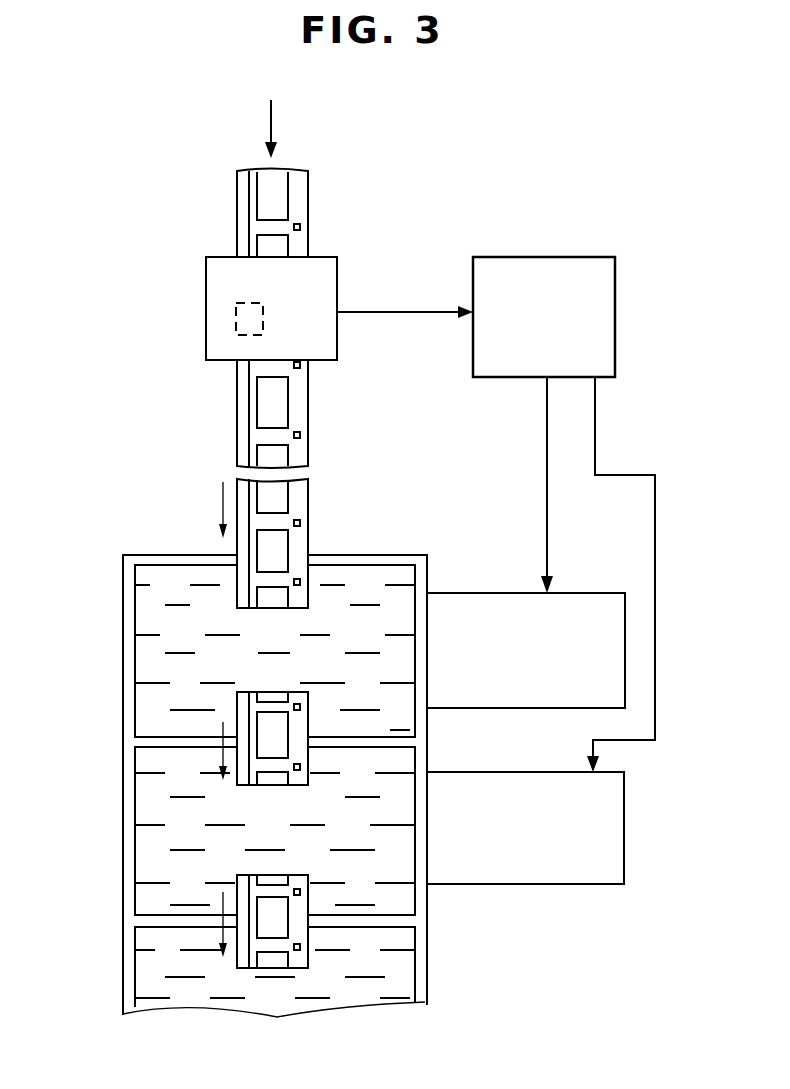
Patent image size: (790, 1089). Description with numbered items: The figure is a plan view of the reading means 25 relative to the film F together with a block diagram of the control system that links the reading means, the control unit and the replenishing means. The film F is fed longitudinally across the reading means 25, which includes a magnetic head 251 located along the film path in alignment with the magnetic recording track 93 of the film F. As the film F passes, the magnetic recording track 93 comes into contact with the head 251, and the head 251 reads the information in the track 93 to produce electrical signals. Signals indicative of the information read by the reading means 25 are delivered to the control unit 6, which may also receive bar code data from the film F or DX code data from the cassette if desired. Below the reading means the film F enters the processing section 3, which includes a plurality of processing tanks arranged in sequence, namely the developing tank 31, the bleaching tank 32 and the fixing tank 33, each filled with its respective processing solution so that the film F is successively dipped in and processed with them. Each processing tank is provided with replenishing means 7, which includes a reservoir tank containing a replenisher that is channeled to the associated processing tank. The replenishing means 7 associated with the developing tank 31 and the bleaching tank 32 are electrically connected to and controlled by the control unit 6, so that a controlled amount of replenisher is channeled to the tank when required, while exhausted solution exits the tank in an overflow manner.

The processing section 3 is at (400, 553).
The developing tank 31 is at (147, 658).
The bleaching tank 32 is at (150, 802).
The fixing tank 33 is at (147, 967).
The reading means 25 is at (320, 270).
The magnetic head 251 is at (235, 318).
The control unit 6 is at (603, 322).
The replenishing means 7 is at (610, 660).
The magnetic recording track 93 is at (245, 412).
The film F is at (297, 415).